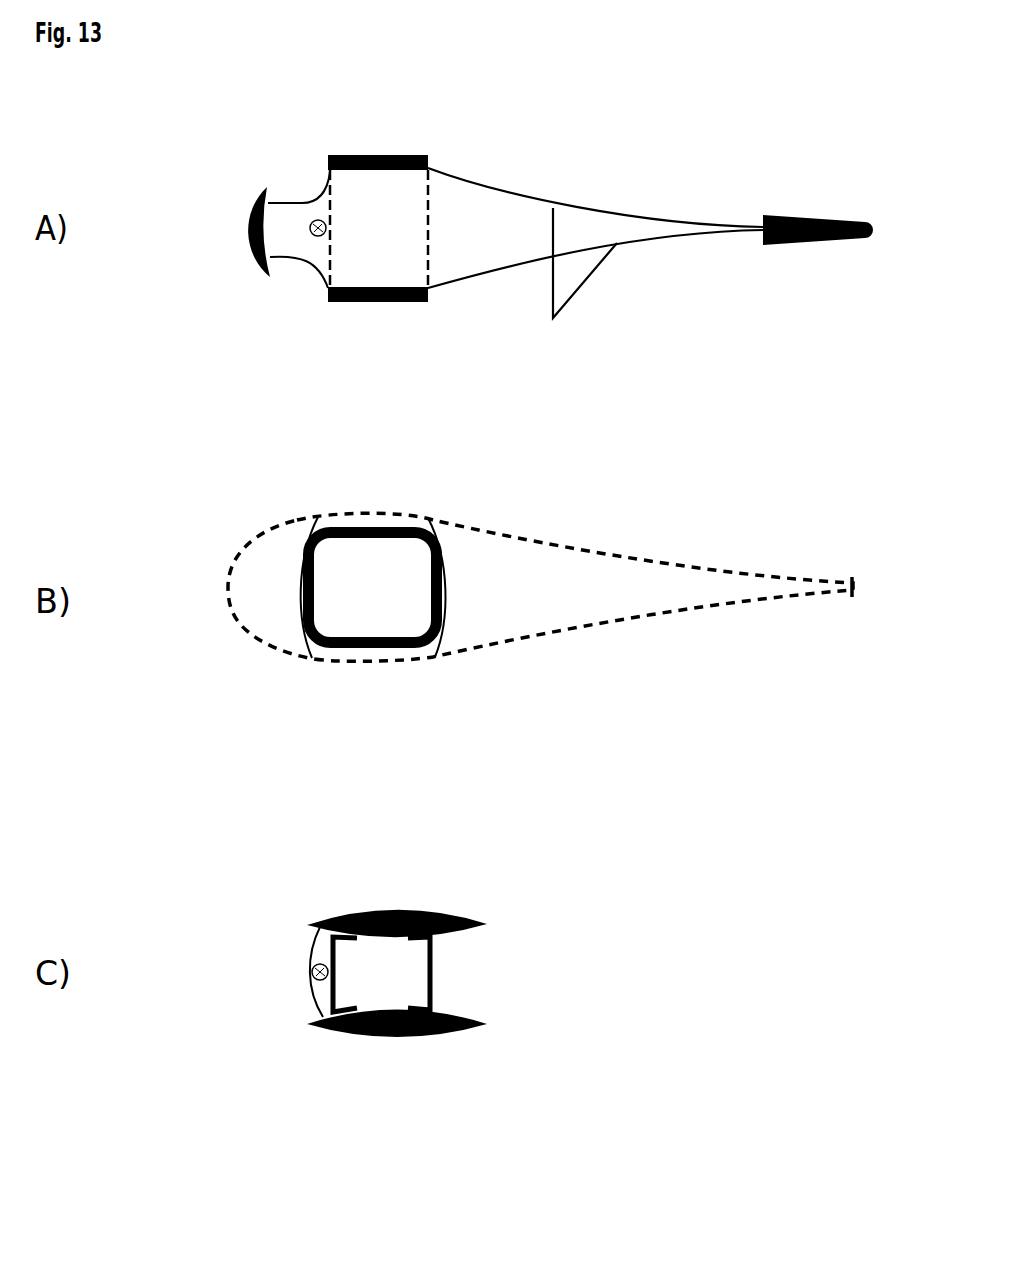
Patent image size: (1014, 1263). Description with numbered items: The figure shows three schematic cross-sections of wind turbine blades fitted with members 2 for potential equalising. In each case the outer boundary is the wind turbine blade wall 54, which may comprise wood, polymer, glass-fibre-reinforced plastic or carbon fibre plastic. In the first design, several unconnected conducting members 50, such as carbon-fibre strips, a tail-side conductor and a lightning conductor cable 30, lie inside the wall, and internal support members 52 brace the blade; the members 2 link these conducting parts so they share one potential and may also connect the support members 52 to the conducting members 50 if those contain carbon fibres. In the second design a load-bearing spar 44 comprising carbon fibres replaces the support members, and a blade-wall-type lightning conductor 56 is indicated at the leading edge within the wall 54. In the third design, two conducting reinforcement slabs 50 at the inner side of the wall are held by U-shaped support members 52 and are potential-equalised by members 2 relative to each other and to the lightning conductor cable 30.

The member for potential equalising 2 is at (310, 212).
The lightning conductor cable 30 is at (315, 235).
The spar 44 is at (377, 648).
The conducting member 50 is at (353, 160).
The internal support member 52 is at (427, 233).
The wind turbine blade wall 54 is at (605, 203).
The blade-wall-type lightning conductor 56 is at (245, 622).